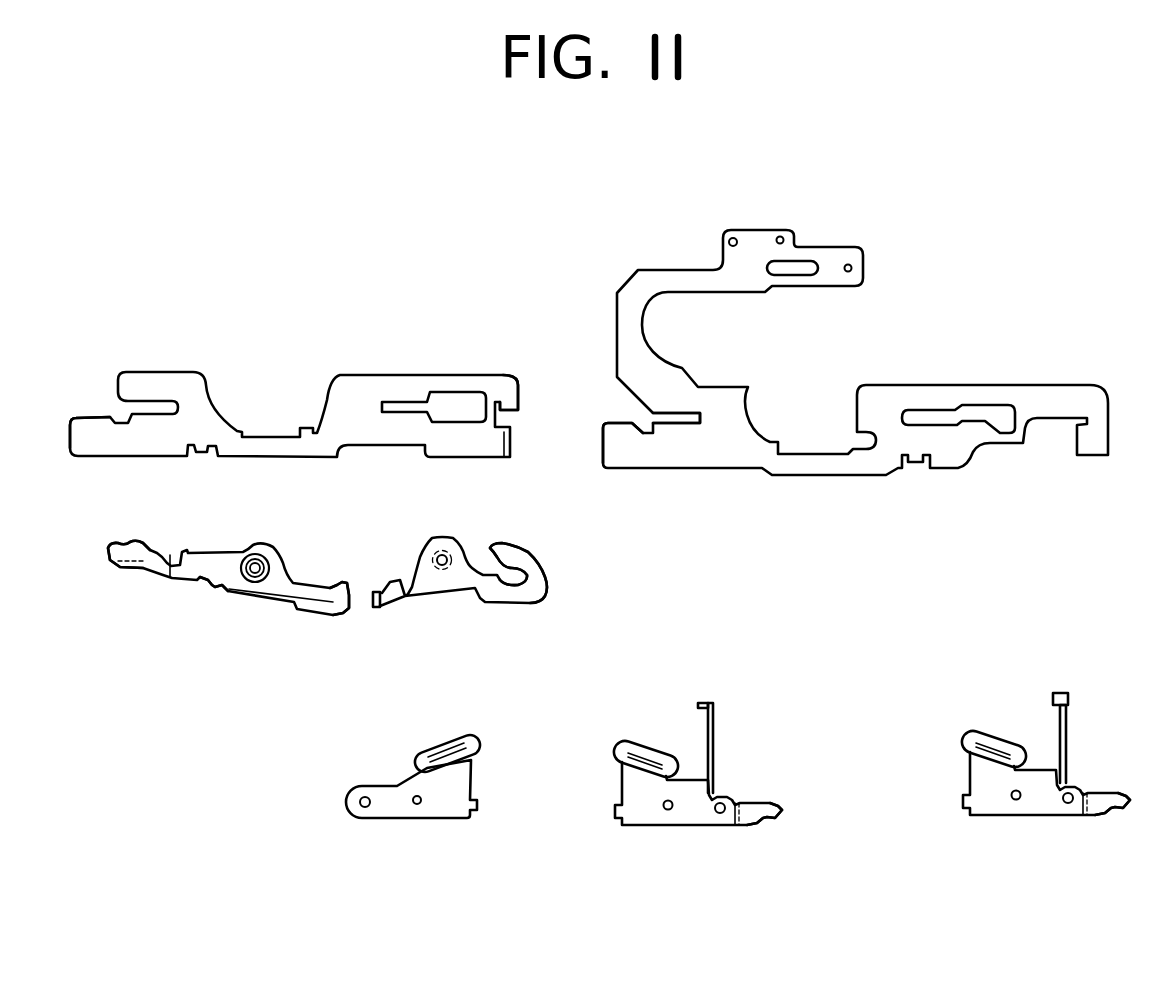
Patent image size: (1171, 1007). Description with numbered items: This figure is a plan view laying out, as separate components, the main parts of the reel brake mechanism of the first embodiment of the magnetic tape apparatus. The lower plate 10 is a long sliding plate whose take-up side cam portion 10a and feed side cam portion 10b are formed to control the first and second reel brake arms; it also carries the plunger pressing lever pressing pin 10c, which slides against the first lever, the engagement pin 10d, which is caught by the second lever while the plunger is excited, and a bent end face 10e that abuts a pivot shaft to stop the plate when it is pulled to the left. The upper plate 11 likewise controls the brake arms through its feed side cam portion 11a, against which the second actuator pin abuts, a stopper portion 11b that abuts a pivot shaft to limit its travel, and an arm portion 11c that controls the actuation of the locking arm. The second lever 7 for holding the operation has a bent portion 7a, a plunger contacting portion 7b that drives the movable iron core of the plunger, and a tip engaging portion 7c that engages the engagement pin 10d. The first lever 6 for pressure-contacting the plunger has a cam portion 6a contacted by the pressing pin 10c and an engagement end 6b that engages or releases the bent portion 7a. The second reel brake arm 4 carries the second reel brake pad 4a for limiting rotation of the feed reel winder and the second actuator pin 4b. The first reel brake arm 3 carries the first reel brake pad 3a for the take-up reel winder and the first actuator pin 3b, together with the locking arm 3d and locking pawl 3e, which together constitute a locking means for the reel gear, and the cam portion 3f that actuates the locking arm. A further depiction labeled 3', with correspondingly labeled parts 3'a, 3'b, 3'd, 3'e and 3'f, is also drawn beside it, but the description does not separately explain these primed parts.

The lower plate 10 is at (850, 465).
The take-up side cam portion 10a is at (978, 422).
The feed side cam portion 10b is at (623, 428).
The plunger pressing lever pressing pin 10c is at (734, 238).
The engagement pin 10d is at (784, 237).
The bent end face 10e is at (705, 421).
The upper plate 11 is at (476, 508).
The feed side cam portion 11a is at (100, 419).
The stopper portion 11b is at (390, 413).
The arm portion 11c is at (510, 397).
The second lever 7 is at (195, 575).
The bent portion 7a is at (216, 589).
The plunger contacting portion 7b is at (128, 570).
The tip engaging portion 7c is at (347, 580).
The first lever 6 is at (538, 568).
The cam portion 6a is at (508, 582).
The engagement end 6b is at (406, 602).
The second reel brake arm 4 is at (438, 808).
The second reel brake pad 4a is at (465, 740).
The second actuator pin 4b is at (370, 813).
The first reel brake arm 3 is at (698, 822).
The first reel brake pad 3a is at (650, 740).
The first actuator pin 3b is at (722, 816).
The locking arm 3d is at (714, 740).
The locking pawl 3e is at (700, 702).
The cam portion 3f is at (781, 817).
The base plate (variant) 3' is at (1046, 818).
The bent tab (variant) 3'a is at (994, 712).
The pivot hole (variant) 3'b is at (1064, 835).
The upright post (variant) 3'd is at (1103, 744).
The post head (variant) 3'e is at (1068, 669).
The bent end (variant) 3'f is at (1123, 836).